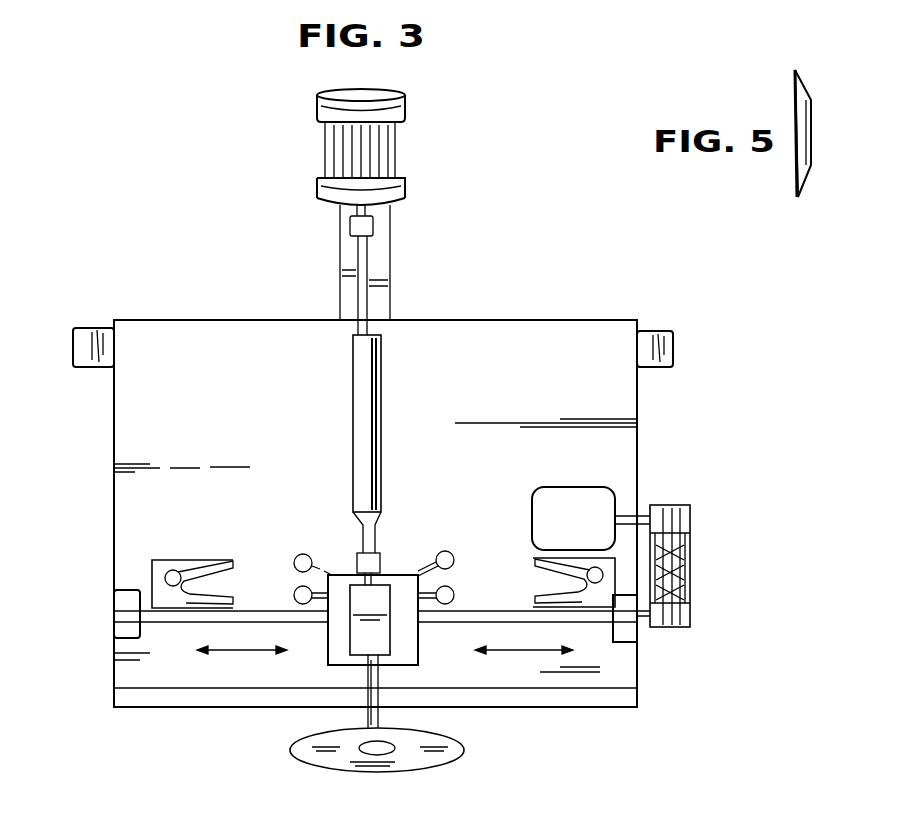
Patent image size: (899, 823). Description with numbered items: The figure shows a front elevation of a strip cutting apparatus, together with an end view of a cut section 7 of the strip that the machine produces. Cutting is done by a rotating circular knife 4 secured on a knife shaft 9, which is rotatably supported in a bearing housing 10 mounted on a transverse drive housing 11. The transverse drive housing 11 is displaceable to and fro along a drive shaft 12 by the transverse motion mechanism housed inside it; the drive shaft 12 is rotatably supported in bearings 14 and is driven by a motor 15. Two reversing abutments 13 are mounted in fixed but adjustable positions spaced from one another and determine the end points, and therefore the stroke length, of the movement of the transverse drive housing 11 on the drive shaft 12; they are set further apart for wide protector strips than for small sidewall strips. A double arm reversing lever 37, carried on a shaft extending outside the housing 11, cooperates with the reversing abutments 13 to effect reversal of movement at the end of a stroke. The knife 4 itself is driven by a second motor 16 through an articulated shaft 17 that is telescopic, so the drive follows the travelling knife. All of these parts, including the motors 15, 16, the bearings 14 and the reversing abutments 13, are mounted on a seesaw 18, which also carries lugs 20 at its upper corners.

In FIG. 3, the circular knife 4 is at (330, 760).
In FIG. 5, the cut section 7 is at (812, 139).
In FIG. 3, the knife shaft 9 is at (368, 695).
In FIG. 3, the bearing housing 10 is at (360, 630).
In FIG. 3, the transverse drive housing 11 is at (410, 648).
In FIG. 3, the drive shaft 12 is at (505, 615).
In FIG. 3, the reversing abutments 13 is at (172, 562).
In FIG. 3, the bearings 14 is at (125, 622).
In FIG. 3, the motor 15 is at (600, 500).
In FIG. 3, the motor 16 is at (320, 108).
In FIG. 3, the articulated shaft 17 is at (362, 365).
In FIG. 3, the seesaw 18 is at (520, 328).
In FIG. 3, the mounting lug 20 is at (85, 337).
In FIG. 3, the double arm reversing lever 37 is at (451, 553).